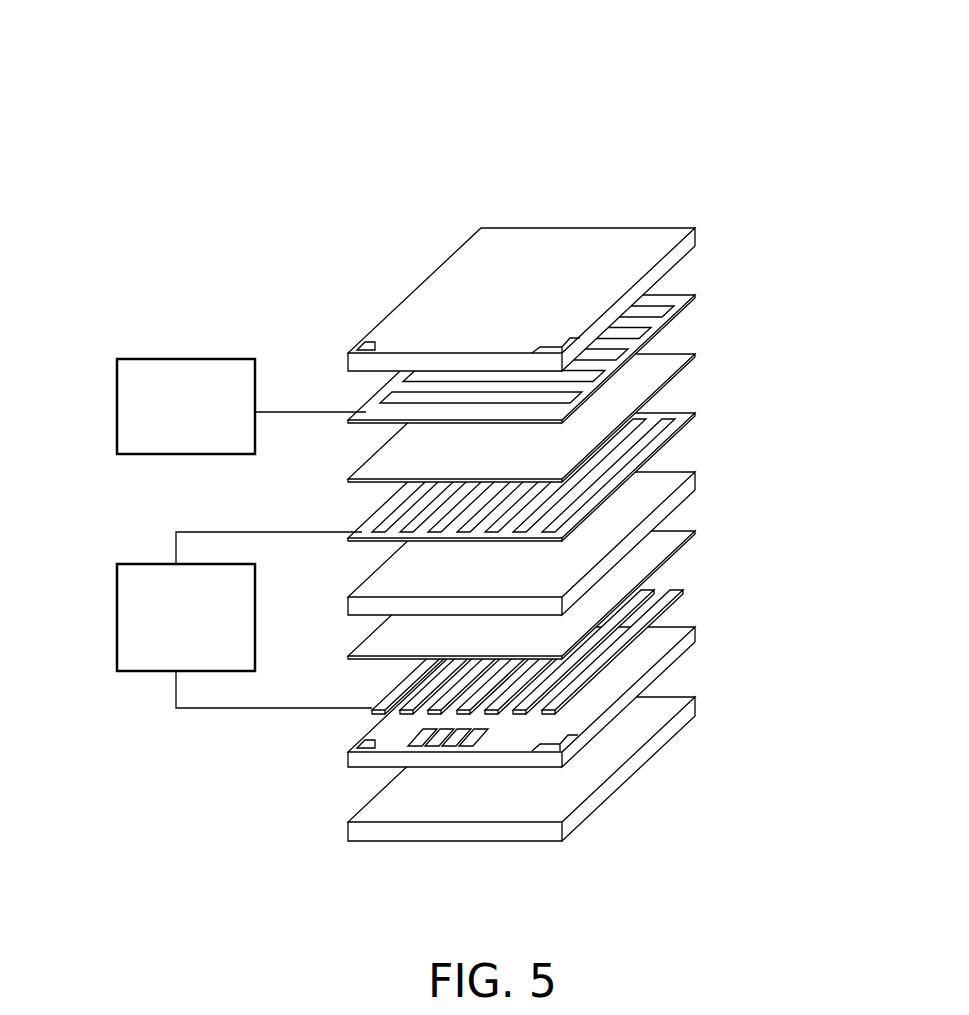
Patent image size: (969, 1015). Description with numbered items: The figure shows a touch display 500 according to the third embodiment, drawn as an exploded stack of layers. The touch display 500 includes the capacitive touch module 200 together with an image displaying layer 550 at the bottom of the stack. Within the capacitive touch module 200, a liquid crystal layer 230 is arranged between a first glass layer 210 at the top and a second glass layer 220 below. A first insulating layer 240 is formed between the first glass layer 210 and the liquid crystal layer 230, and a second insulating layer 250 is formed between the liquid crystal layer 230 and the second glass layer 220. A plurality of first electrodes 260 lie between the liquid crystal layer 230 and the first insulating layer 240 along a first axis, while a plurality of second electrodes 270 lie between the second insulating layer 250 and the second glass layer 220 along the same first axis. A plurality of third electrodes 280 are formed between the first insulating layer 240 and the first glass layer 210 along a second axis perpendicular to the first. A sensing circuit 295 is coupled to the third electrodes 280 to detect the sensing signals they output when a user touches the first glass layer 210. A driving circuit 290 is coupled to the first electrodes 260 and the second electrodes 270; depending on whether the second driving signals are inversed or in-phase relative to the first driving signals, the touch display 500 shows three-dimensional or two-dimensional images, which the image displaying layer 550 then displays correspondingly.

The touch display 500 is at (761, 80).
The capacitive touch module 200 is at (611, 491).
The first glass layer 210 is at (697, 236).
The third electrodes 280 is at (697, 297).
The first insulating layer 240 is at (697, 356).
The first electrodes 260 is at (697, 415).
The liquid crystal layer 230 is at (697, 477).
The second insulating layer 250 is at (697, 532).
The second electrodes 270 is at (684, 594).
The second glass layer 220 is at (697, 634).
The image displaying layer 550 is at (697, 702).
The sensing circuit 295 is at (117, 397).
The driving circuit 290 is at (117, 612).